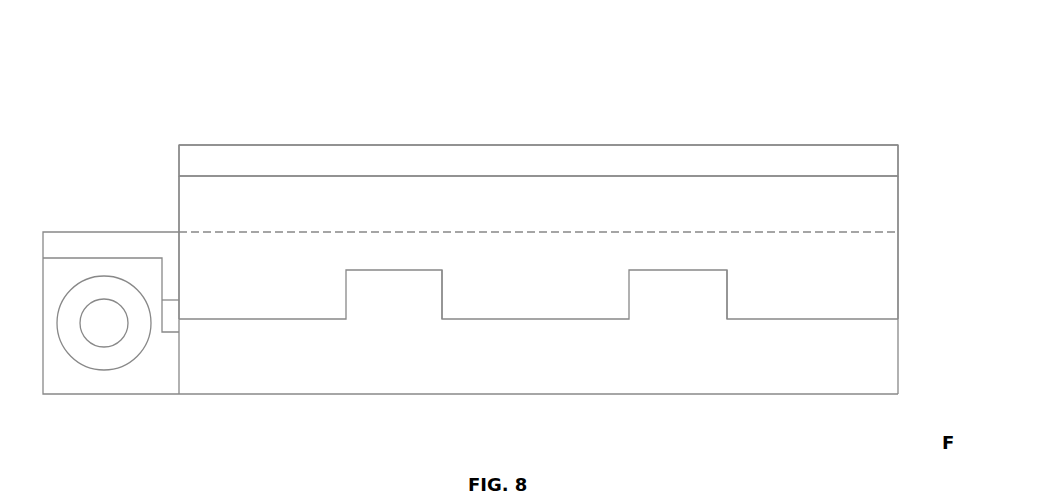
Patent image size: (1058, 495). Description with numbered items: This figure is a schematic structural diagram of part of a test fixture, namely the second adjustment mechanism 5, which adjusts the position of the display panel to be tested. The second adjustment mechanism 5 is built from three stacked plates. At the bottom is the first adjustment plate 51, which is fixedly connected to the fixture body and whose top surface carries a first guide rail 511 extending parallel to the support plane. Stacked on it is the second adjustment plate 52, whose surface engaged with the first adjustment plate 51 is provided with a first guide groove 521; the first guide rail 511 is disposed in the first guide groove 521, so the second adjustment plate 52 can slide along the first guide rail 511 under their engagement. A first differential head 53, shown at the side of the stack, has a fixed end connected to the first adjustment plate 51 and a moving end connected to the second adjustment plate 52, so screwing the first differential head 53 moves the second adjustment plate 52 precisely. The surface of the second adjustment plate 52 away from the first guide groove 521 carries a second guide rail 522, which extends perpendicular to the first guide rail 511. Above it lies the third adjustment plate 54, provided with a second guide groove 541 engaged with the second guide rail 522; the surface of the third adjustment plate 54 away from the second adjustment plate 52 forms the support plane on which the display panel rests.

The second adjustment mechanism 5 is at (492, 227).
The first adjustment plate 51 is at (560, 358).
The first guide rail 511 is at (389, 300).
The second adjustment plate 52 is at (560, 272).
The first guide groove 521 is at (453, 309).
The second guide rail 522 is at (495, 210).
The first differential head 53 is at (104, 320).
The third adjustment plate 54 is at (875, 165).
The second guide groove 541 is at (567, 163).